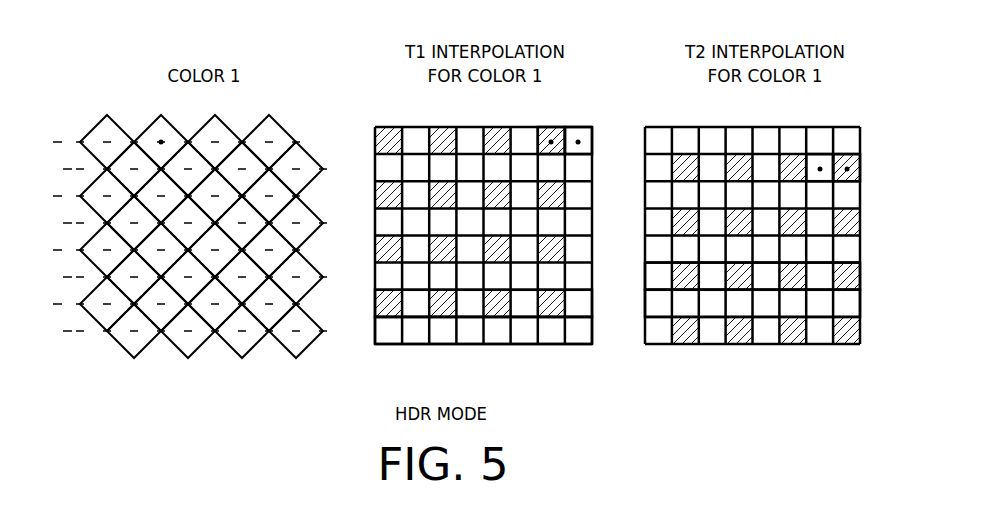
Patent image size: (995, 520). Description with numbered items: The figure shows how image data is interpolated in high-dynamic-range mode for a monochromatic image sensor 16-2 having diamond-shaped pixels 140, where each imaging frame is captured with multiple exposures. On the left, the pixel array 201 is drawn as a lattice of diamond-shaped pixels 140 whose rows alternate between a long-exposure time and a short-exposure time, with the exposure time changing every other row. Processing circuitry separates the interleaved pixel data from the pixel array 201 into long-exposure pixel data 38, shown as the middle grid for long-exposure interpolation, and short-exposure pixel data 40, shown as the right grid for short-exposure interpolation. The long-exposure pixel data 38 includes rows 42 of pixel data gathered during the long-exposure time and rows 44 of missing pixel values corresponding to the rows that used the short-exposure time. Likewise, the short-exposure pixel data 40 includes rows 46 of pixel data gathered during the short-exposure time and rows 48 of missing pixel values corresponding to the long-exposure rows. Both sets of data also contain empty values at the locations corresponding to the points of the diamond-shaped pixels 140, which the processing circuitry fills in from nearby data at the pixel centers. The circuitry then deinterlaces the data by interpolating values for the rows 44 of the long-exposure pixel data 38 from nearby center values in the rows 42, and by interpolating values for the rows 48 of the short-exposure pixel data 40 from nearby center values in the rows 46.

The image sensor 16-2 is at (107, 363).
The pixel array 201 is at (287, 110).
The diamond-shaped pixels 140 is at (225, 348).
The long-exposure pixel data 38 is at (412, 363).
The short-exposure pixel data 40 is at (682, 363).
The rows of pixel data 42 is at (593, 302).
The rows of missing pixel values 44 is at (593, 329).
The rows of pixel data 46 is at (861, 277).
The rows of missing pixel values 48 is at (861, 303).